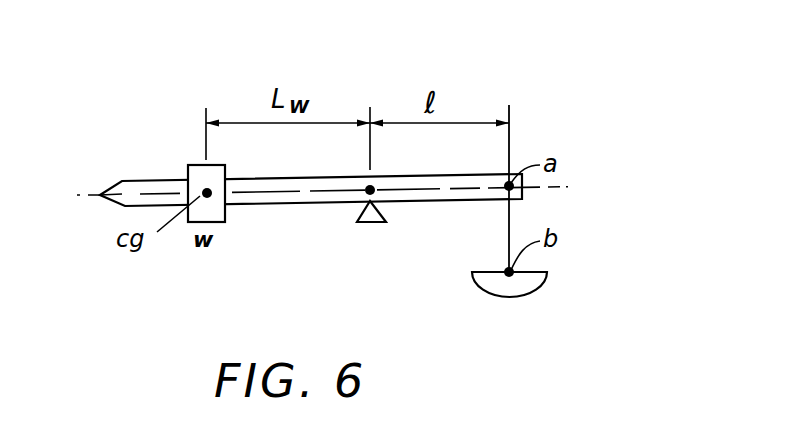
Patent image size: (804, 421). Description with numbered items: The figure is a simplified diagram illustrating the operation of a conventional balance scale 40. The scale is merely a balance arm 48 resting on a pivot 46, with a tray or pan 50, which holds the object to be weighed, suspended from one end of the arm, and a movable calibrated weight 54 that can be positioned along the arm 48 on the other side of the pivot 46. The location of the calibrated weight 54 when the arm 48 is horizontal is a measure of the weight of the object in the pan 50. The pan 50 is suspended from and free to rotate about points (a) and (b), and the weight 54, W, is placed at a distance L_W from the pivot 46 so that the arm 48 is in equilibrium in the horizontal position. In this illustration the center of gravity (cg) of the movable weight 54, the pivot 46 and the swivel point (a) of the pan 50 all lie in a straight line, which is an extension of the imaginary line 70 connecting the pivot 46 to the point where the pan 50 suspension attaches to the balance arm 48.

The balance scale 40 is at (516, 93).
The pivot 46 is at (356, 222).
The balance arm 48 is at (143, 180).
The pan 50 is at (547, 273).
The movable calibrated weight 54 is at (198, 212).
The imaginary line 70 is at (478, 192).